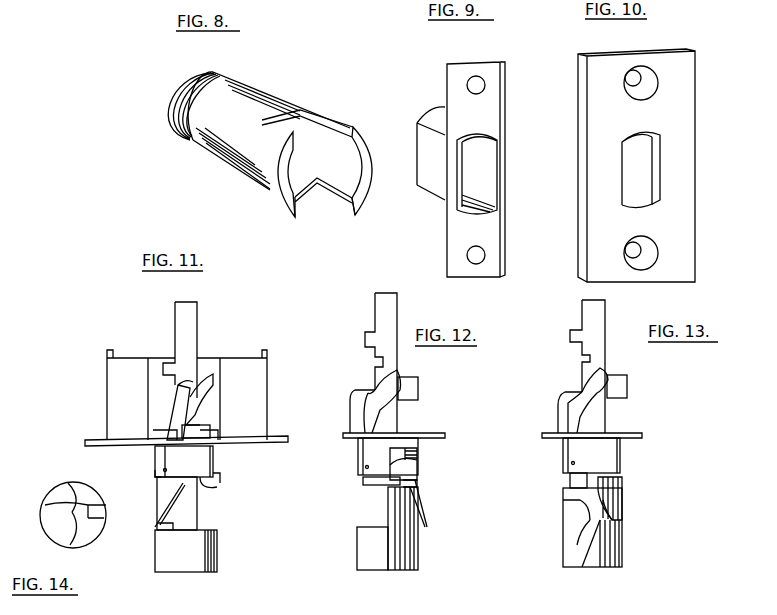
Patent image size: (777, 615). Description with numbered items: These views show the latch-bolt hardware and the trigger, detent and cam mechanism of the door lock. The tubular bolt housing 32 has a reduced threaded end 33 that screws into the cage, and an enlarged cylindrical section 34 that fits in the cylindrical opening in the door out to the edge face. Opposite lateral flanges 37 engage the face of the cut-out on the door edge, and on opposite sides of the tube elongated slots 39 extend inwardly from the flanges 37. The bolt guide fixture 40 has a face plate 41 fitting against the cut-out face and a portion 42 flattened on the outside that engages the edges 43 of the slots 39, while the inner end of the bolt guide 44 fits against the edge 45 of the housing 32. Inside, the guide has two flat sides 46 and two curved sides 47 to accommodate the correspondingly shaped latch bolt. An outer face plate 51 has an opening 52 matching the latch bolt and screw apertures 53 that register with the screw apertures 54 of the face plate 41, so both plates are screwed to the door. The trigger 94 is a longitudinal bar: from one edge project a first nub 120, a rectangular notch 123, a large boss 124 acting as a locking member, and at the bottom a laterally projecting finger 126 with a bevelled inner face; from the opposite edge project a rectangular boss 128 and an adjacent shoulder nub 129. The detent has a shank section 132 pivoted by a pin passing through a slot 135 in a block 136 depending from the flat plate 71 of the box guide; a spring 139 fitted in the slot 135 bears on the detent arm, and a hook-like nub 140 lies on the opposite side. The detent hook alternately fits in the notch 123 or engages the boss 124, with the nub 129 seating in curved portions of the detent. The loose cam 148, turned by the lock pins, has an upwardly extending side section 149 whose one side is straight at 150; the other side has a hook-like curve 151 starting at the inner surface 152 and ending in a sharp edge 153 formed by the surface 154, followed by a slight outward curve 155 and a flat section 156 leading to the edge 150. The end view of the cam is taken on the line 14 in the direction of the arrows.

In FIG. 8, the tubular bolt housing 32 is at (283, 91).
In FIG. 8, the reduced threaded end 33 is at (205, 72).
In FIG. 8, the enlarged cylindrical section 34 is at (221, 146).
In FIG. 8, the lateral flanges 37 is at (279, 190).
In FIG. 8, the elongated slots 39 is at (322, 208).
In FIG. 8, the edges of the slots 43 is at (355, 127).
In FIG. 8, the edge of the housing 45 is at (303, 112).
In FIG. 9, the bolt guide fixture 40 is at (508, 102).
In FIG. 9, the face plate 41 is at (497, 237).
In FIG. 9, the flattened portion 42 is at (432, 170).
In FIG. 9, the inner end of the bolt guide 44 is at (426, 116).
In FIG. 9, the flat sides 46 is at (482, 165).
In FIG. 9, the curved sides 47 is at (488, 199).
In FIG. 9, the screw apertures 54 is at (482, 256).
In FIG. 10, the face plate 51 is at (677, 101).
In FIG. 10, the opening 52 is at (652, 170).
In FIG. 10, the screw apertures 53 is at (630, 77).
In FIG. 11, the trigger 94 is at (198, 323).
In FIG. 12, the trigger 94 is at (390, 318).
In FIG. 13, the trigger 94 is at (597, 326).
In FIG. 11, the first nub 120 is at (165, 365).
In FIG. 12, the first nub 120 is at (363, 340).
In FIG. 13, the first nub 120 is at (572, 336).
In FIG. 12, the rectangular notch 123 is at (375, 362).
In FIG. 13, the rectangular notch 123 is at (582, 360).
In FIG. 11, the large boss 124 is at (155, 452).
In FIG. 12, the large boss 124 is at (350, 412).
In FIG. 13, the large boss 124 is at (558, 420).
In FIG. 11, the laterally projecting finger 126 is at (172, 517).
In FIG. 12, the laterally projecting finger 126 is at (368, 485).
In FIG. 13, the laterally projecting finger 126 is at (577, 480).
In FIG. 11, the rectangular boss 128 is at (213, 422).
In FIG. 12, the rectangular boss 128 is at (414, 384).
In FIG. 13, the rectangular boss 128 is at (624, 384).
In FIG. 11, the shoulder nub 129 is at (195, 423).
In FIG. 12, the shoulder nub 129 is at (397, 400).
In FIG. 13, the shoulder nub 129 is at (600, 395).
In FIG. 11, the shank section 132 is at (172, 415).
In FIG. 12, the shank section 132 is at (365, 422).
In FIG. 13, the shank section 132 is at (570, 427).
In FIG. 11, the slot 135 is at (160, 477).
In FIG. 13, the slot 135 is at (563, 468).
In FIG. 11, the block 136 is at (200, 455).
In FIG. 12, the block 136 is at (375, 455).
In FIG. 13, the block 136 is at (580, 453).
In FIG. 11, the spring 139 is at (220, 478).
In FIG. 12, the spring 139 is at (410, 452).
In FIG. 11, the hook-like nub 140 is at (217, 490).
In FIG. 12, the hook-like nub 140 is at (405, 470).
In FIG. 11, the loose cam 148 is at (172, 555).
In FIG. 14, the loose cam 148 is at (45, 516).
In FIG. 12, the loose cam 148 is at (405, 557).
In FIG. 13, the loose cam 148 is at (578, 545).
In FIG. 11, the side section 149 is at (181, 485).
In FIG. 12, the side section 149 is at (418, 500).
In FIG. 13, the side section 149 is at (578, 530).
In FIG. 12, the straight side 150 is at (389, 510).
In FIG. 11, the hook-like curve 151 is at (177, 492).
In FIG. 13, the hook-like curve 151 is at (617, 500).
In FIG. 14, the inner surface 152 is at (66, 540).
In FIG. 13, the inner surface 152 is at (615, 518).
In FIG. 11, the sharp edge 153 is at (195, 487).
In FIG. 14, the sharp edge 153 is at (62, 486).
In FIG. 14, the surface 154 is at (45, 505).
In FIG. 12, the surface 154 is at (410, 483).
In FIG. 13, the surface 154 is at (615, 480).
In FIG. 14, the outward curve 155 is at (104, 520).
In FIG. 12, the outward curve 155 is at (420, 512).
In FIG. 13, the outward curve 155 is at (590, 560).
In FIG. 14, the flat section 156 is at (90, 538).
In FIG. 13, the flat section 156 is at (575, 500).
In FIG. 11, the flat plate 71 is at (276, 446).
In FIG. 12, the section line 14— 14 is at (340, 480).